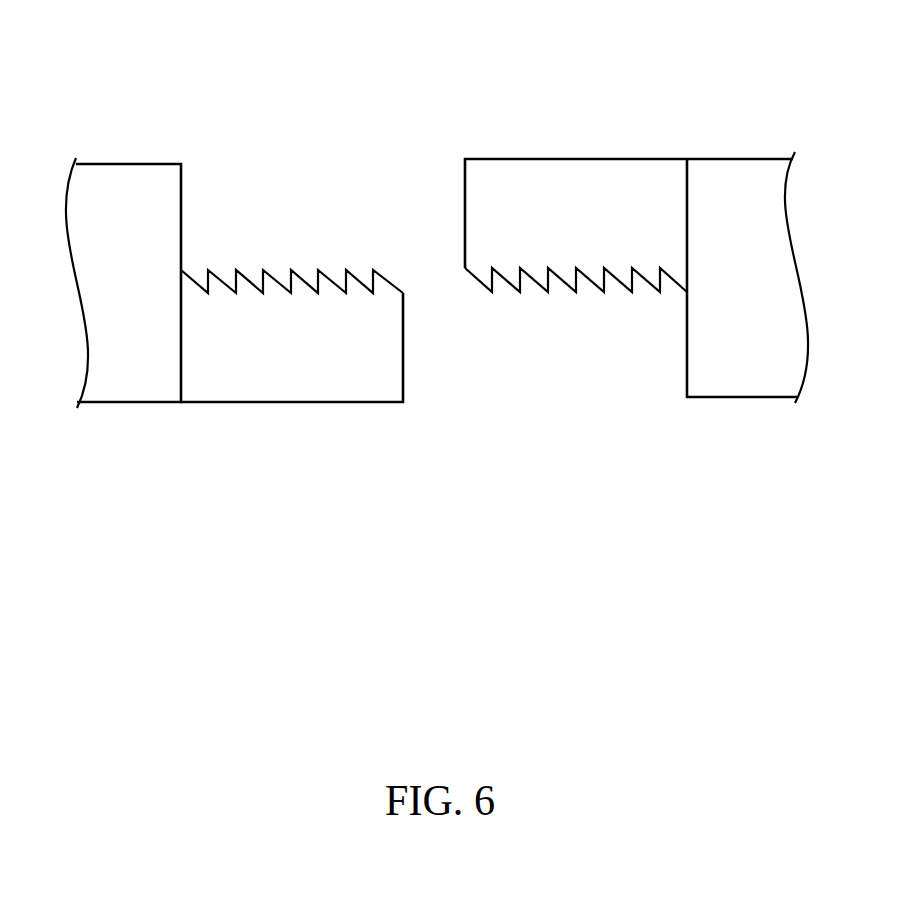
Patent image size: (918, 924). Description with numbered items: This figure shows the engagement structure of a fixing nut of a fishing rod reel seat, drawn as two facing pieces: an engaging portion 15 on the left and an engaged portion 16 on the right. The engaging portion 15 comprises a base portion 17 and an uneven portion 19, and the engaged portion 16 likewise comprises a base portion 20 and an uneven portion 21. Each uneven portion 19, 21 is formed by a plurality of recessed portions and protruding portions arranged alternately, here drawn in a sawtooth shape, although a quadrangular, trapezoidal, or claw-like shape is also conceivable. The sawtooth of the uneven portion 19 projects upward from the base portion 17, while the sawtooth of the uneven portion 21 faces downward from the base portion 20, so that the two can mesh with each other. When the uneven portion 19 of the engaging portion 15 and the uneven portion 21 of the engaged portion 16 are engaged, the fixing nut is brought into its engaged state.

The engaging portion 15 is at (234, 338).
The engaged portion 16 is at (636, 227).
The base portion 17 is at (362, 373).
The uneven portion 19 is at (304, 282).
The base portion 20 is at (520, 172).
The uneven portion 21 is at (597, 273).